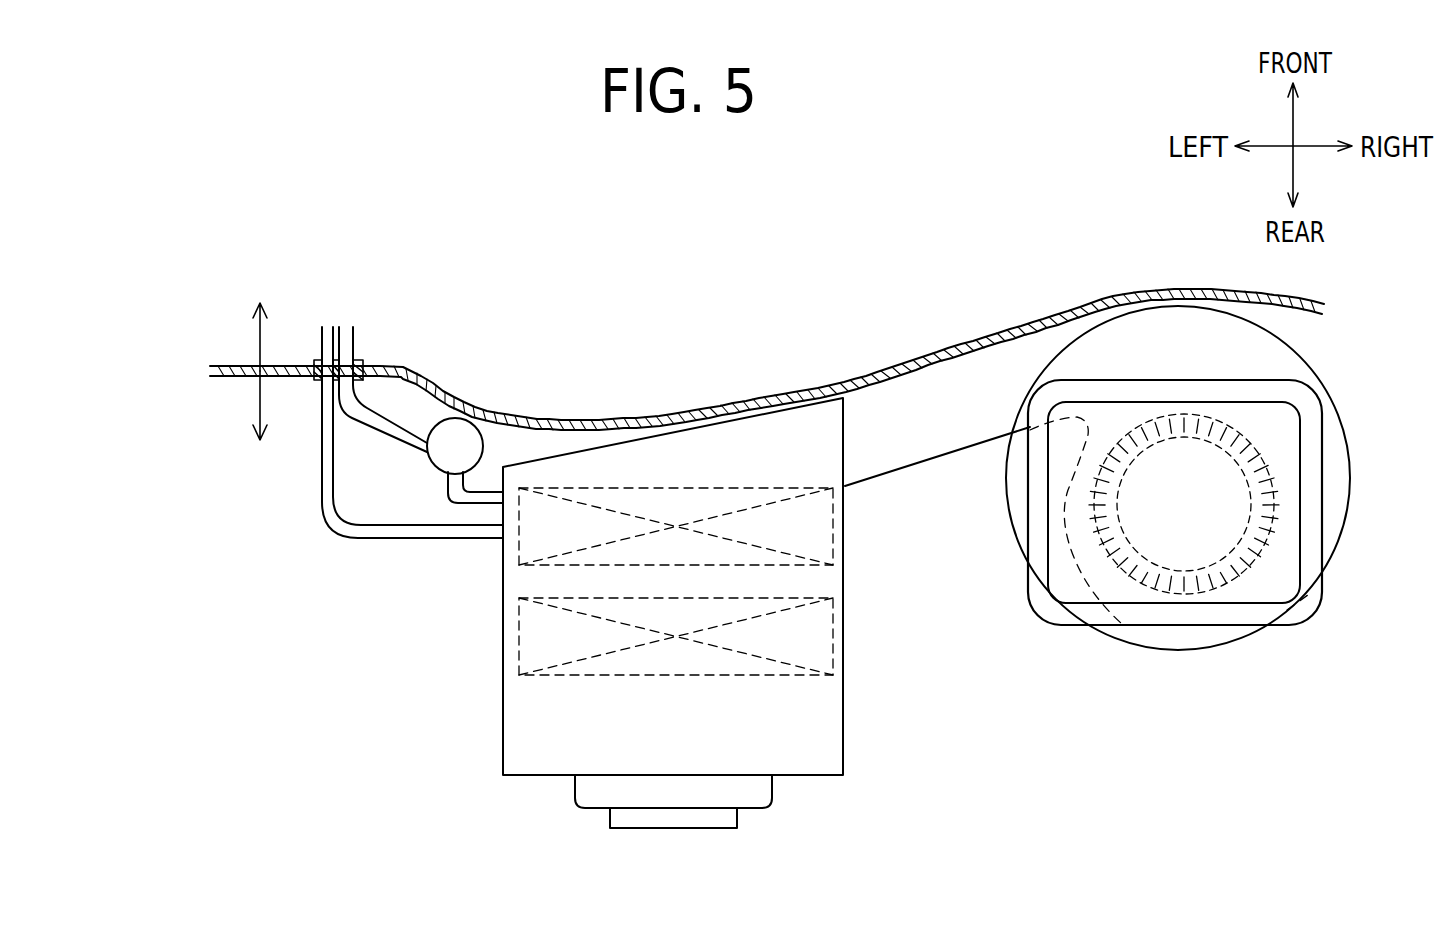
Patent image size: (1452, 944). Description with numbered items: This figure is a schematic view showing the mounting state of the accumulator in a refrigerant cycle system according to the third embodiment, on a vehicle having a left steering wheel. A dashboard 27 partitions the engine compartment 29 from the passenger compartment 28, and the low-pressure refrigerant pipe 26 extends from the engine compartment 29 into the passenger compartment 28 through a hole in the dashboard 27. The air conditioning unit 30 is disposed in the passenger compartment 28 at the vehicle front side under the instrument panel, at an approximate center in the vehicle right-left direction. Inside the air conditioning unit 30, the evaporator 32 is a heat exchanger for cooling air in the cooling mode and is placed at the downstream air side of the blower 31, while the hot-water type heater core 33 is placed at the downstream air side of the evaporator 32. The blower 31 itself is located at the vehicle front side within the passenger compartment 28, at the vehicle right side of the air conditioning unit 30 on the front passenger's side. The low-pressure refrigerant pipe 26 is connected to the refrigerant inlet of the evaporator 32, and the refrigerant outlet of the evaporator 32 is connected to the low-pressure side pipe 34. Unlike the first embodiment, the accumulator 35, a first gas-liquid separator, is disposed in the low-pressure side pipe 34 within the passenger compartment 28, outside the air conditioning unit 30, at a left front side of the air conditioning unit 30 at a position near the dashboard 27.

The low-pressure refrigerant pipe 26 is at (332, 523).
The dashboard 27 is at (236, 367).
The passenger compartment 28 is at (241, 441).
The engine compartment 29 is at (261, 301).
The air conditioning unit 30 is at (490, 637).
The blower 31 is at (1147, 580).
The evaporator 32 is at (605, 566).
The heater core 33 is at (603, 676).
The low-pressure refrigerant pipe 34 is at (447, 490).
The accumulator 35 is at (453, 437).